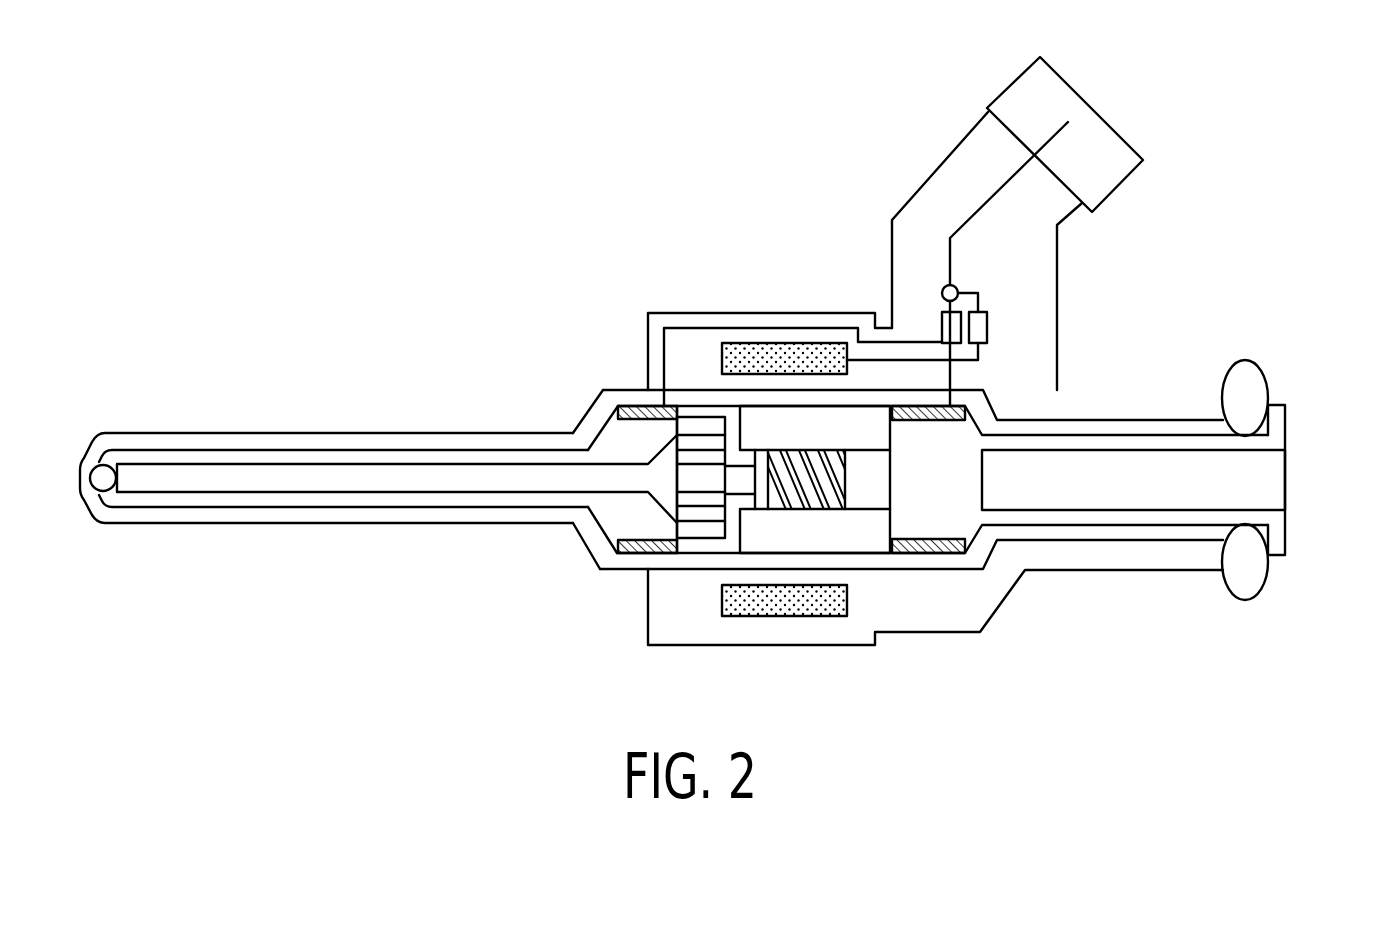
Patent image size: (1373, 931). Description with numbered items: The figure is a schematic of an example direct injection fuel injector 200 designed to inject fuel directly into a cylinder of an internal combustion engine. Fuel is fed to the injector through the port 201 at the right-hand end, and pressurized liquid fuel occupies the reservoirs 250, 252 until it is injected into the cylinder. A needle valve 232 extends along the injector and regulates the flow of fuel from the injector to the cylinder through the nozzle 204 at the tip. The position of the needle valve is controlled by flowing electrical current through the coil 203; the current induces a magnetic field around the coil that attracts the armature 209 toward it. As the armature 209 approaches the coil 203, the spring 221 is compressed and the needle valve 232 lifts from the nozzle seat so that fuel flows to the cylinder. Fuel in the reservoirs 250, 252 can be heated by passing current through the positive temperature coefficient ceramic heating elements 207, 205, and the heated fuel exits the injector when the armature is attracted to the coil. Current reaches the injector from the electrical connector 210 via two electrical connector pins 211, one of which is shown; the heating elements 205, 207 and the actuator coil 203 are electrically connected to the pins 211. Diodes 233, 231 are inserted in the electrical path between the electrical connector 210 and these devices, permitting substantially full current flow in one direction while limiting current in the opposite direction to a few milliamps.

The fuel injector 200 is at (382, 525).
The port 201 is at (1285, 500).
The coil 203 is at (755, 617).
The nozzle 204 is at (82, 492).
The heating element 205 is at (953, 550).
The heating element 207 is at (633, 546).
The armature 209 is at (690, 533).
The electrical connector 210 is at (1123, 182).
The electrical connector pin 211 is at (1090, 128).
The spring 221 is at (837, 517).
The diode 231 is at (997, 323).
The needle valve 232 is at (238, 472).
The diode 233 is at (930, 317).
The reservoir 250 is at (920, 493).
The reservoir 252 is at (613, 450).